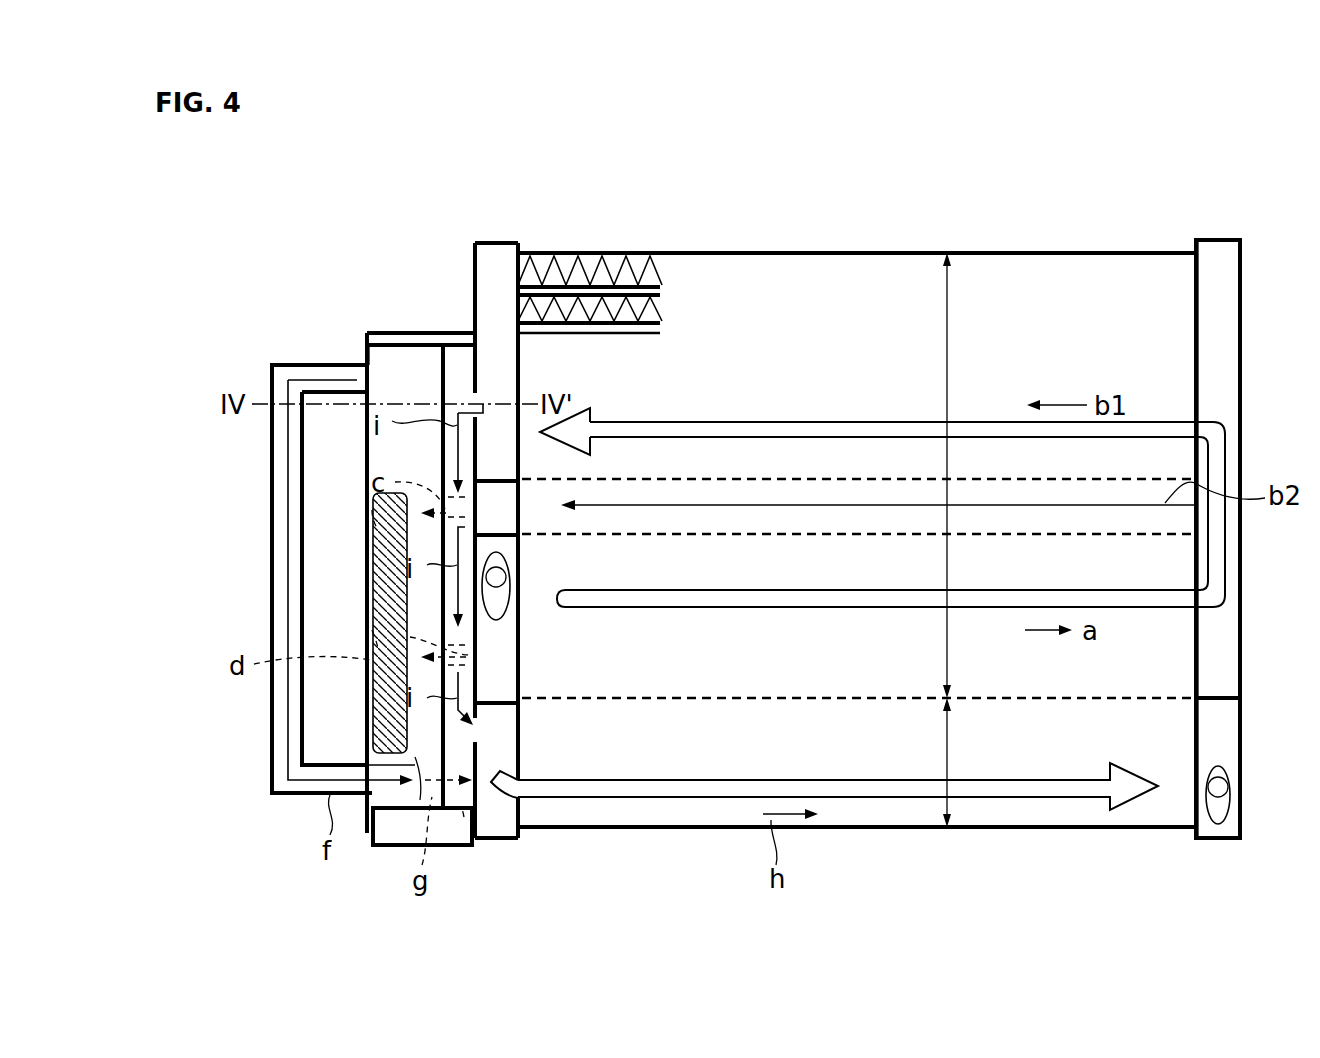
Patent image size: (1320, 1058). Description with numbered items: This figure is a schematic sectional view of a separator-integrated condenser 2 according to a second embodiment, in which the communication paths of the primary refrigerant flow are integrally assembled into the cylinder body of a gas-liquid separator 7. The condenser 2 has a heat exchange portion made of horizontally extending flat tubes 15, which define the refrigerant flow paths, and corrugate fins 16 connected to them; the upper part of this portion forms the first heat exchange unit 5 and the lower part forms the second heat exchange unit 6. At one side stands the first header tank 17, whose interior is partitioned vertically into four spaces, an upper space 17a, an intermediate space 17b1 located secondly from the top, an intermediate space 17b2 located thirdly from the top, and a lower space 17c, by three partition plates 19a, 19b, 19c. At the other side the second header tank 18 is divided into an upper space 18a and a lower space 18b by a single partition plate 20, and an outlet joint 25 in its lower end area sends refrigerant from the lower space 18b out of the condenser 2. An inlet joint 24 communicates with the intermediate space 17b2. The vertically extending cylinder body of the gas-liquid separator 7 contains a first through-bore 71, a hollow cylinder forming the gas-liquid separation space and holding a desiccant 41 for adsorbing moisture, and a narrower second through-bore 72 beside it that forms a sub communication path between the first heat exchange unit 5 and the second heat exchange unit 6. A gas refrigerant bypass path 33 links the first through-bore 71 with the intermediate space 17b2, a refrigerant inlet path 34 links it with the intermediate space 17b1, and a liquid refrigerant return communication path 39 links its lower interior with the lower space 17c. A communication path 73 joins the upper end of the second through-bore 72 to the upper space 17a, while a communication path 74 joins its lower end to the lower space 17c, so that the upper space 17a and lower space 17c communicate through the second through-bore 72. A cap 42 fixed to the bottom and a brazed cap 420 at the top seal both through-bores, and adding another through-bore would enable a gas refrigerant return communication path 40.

The condenser 2 is at (825, 254).
The first heat exchange unit 5 is at (950, 366).
The second heat exchange unit 6 is at (952, 756).
The gas-liquid separator 7 is at (367, 491).
The flat tubes 15 is at (655, 296).
The corrugate fins 16 is at (544, 268).
The first header tank 17 is at (475, 262).
The upper space 17a is at (490, 292).
The intermediate space 17b1 is at (477, 465).
The intermediate space 17b2 is at (477, 632).
The lower space 17c is at (507, 832).
The second header tank 18 is at (1218, 262).
The upper space 18a is at (1218, 326).
The lower space 18b is at (1218, 742).
The partition plate 19a is at (519, 466).
The partition plate 19b is at (519, 548).
The partition plate 19c is at (500, 705).
The partition plate 20 is at (1220, 697).
The inlet joint 24 is at (503, 613).
The outlet joint 25 is at (1222, 806).
The gas refrigerant bypass path 33 is at (372, 630).
The refrigerant inlet path 34 is at (372, 510).
The liquid refrigerant return communication path 39 is at (464, 817).
The gas refrigerant return communication path 40 is at (272, 727).
The desiccant 41 is at (385, 562).
The cap 42 is at (392, 838).
The first through-bore 71 is at (408, 362).
The second through-bore 72 is at (463, 435).
The communication path 73 is at (475, 400).
The communication path 74 is at (477, 732).
The cap 420 is at (375, 345).